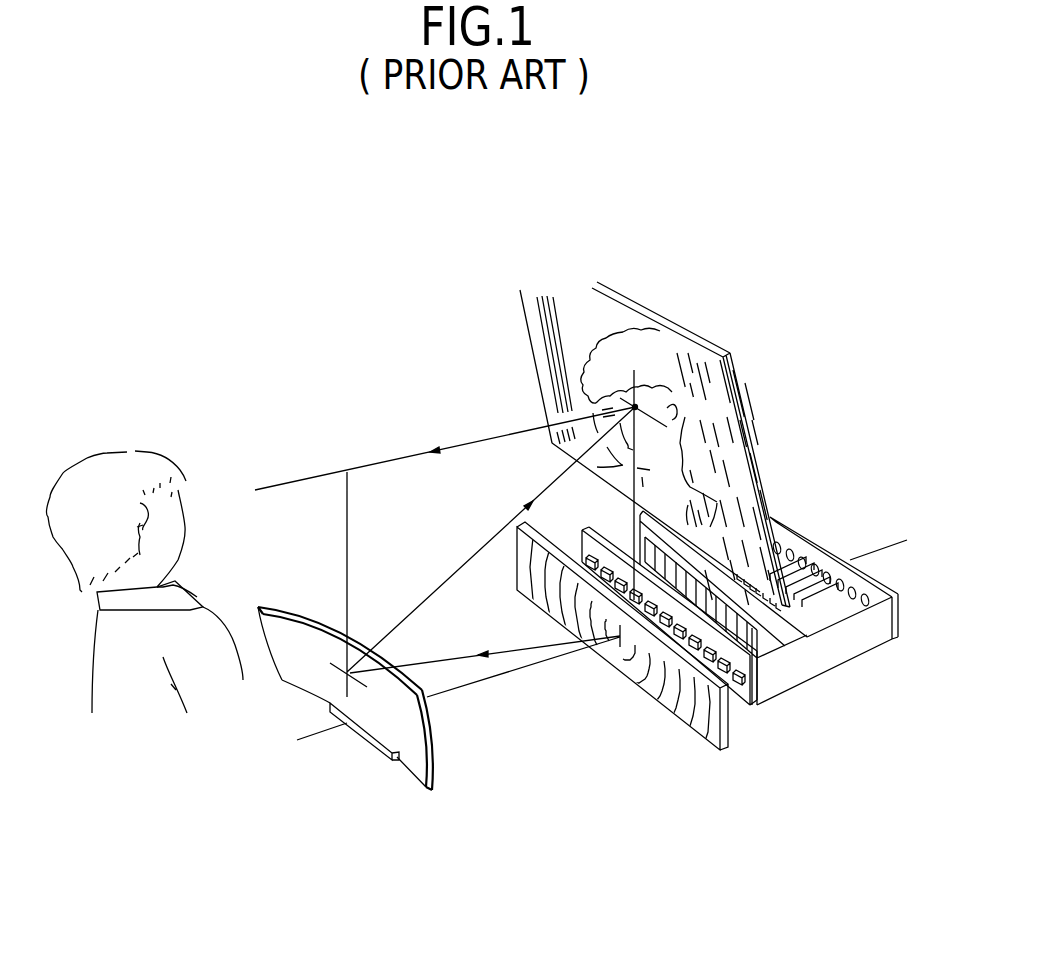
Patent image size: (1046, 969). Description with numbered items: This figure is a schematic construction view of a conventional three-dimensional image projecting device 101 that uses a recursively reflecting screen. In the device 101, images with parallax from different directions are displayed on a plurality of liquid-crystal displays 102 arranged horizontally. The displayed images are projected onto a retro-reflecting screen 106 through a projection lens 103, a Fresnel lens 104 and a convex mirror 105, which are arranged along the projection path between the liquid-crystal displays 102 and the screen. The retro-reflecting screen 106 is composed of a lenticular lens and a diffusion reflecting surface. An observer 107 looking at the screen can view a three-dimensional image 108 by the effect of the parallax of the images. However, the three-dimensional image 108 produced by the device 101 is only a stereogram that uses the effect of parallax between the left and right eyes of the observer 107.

The three-dimensional image projecting device 101 is at (575, 205).
The liquid-crystal displays 102 is at (762, 650).
The projection lens 103 is at (738, 682).
The Fresnel lens 104 is at (700, 727).
The convex mirror 105 is at (420, 765).
The retro-reflecting screen 106 is at (714, 360).
The observer 107 is at (130, 453).
The three-dimensional image 108 is at (622, 330).